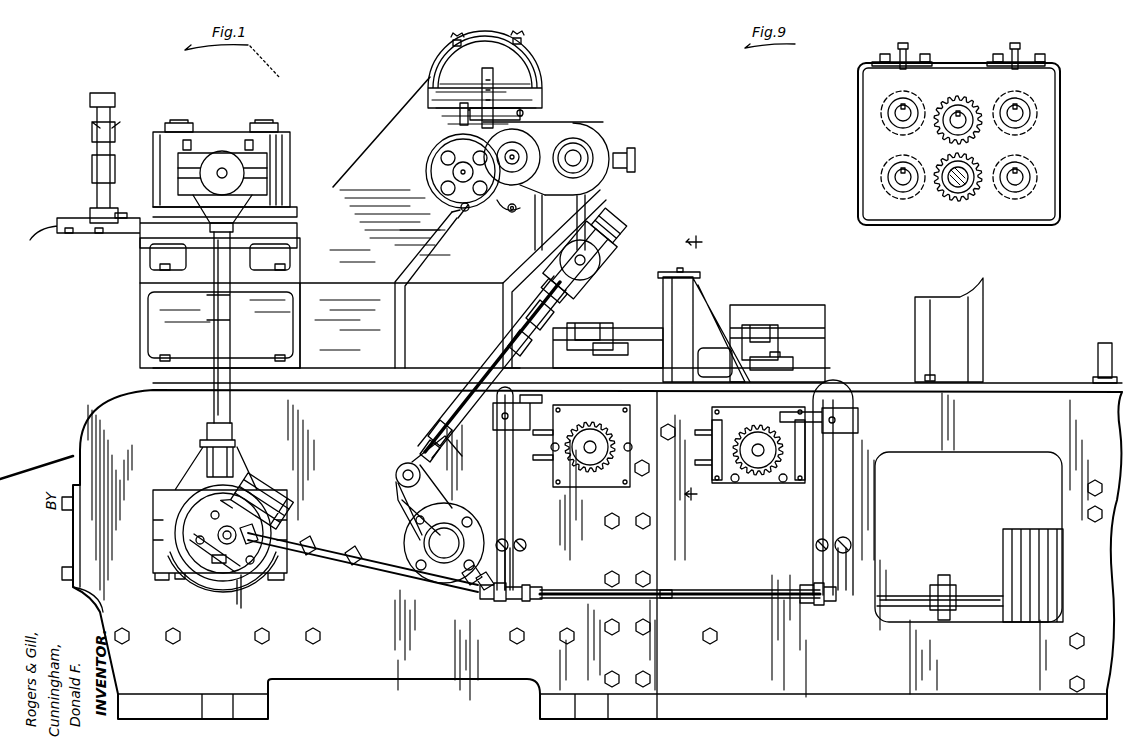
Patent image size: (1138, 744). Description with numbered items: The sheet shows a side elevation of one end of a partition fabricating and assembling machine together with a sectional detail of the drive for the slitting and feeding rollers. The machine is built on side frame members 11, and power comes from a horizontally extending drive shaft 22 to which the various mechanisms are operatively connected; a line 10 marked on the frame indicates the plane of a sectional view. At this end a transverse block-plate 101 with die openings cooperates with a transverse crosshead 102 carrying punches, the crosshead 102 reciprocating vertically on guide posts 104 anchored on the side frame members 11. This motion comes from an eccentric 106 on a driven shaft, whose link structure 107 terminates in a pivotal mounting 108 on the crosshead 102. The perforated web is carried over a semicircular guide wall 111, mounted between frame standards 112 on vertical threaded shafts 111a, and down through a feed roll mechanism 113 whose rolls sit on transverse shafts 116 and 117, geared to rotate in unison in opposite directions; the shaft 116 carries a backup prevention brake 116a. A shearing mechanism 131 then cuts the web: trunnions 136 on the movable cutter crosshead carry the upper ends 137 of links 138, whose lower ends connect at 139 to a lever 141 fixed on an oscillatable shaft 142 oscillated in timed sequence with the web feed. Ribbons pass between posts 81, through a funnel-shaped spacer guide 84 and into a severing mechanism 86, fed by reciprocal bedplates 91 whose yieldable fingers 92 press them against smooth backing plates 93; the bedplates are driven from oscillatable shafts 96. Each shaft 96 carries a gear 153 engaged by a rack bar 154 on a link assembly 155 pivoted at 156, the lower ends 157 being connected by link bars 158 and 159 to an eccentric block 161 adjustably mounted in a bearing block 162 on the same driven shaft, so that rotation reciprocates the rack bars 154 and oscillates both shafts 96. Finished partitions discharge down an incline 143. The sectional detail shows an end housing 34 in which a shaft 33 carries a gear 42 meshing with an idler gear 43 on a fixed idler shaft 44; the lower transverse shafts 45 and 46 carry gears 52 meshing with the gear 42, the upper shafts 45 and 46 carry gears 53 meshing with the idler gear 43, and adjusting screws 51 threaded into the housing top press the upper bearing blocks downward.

In FIG. 1, the machine section line 10 is at (704, 368).
In FIG. 1, the side frame members 11 is at (108, 392).
In FIG. 1, the drive shaft 22 is at (912, 592).
In FIG. 9, the shaft 33 is at (962, 190).
In FIG. 9, the end housing 34 is at (1060, 138).
In FIG. 9, the gear 42 is at (972, 192).
In FIG. 9, the idler gear 43 is at (965, 100).
In FIG. 9, the idler shaft 44 is at (954, 112).
In FIG. 9, the rotatable shafts 45 is at (898, 177).
In FIG. 9, the rotatable shafts 46 is at (1020, 177).
In FIG. 9, the adjusting screws 51 is at (1020, 43).
In FIG. 9, the gear 52 is at (1032, 185).
In FIG. 9, the gears 53 is at (1032, 98).
In FIG. 1, the posts 81 is at (1108, 343).
In FIG. 1, the spacer guide 84 is at (972, 335).
In FIG. 1, the severing mechanism 86 is at (708, 298).
In FIG. 1, the bedplate 91 is at (800, 362).
In FIG. 1, the yieldable fingers 92 is at (760, 325).
In FIG. 1, the backing plates 93 is at (818, 335).
In FIG. 1, the oscillatably rotatable shafts 96 is at (756, 460).
In FIG. 1, the block-plate 101 is at (140, 272).
In FIG. 1, the crosshead 102 is at (280, 152).
In FIG. 1, the guide posts 104 is at (263, 123).
In FIG. 1, the eccentric 106 is at (198, 512).
In FIG. 1, the link structure 107 is at (214, 360).
In FIG. 1, the pivotal mounting 108 is at (225, 168).
In FIG. 1, the guide wall 111 is at (540, 58).
In FIG. 1, the threaded shafts 111a is at (493, 90).
In FIG. 1, the frame standards 112 is at (390, 110).
In FIG. 1, the feed roll mechanism 113 is at (517, 148).
In FIG. 1, the transverse shaft 116 is at (428, 240).
In FIG. 1, the backup prevention brake 116a is at (578, 150).
In FIG. 1, the transverse shaft 117 is at (580, 155).
In FIG. 1, the shearing mechanism 131 is at (545, 255).
In FIG. 1, the trunnions 136 is at (584, 258).
In FIG. 1, the upper ends of links 137 is at (600, 262).
In FIG. 1, the links 138 is at (505, 358).
In FIG. 1, the lower end connection 139 is at (404, 462).
In FIG. 1, the lever 141 is at (445, 482).
In FIG. 1, the oscillatable shaft 142 is at (440, 543).
In FIG. 1, the incline 143 is at (58, 462).
In FIG. 1, the gear 153 is at (765, 470).
In FIG. 1, the rack bars 154 is at (858, 420).
In FIG. 1, the link assemblies 155 is at (845, 500).
In FIG. 1, the pivots 156 is at (852, 546).
In FIG. 1, the lower ends of link assemblies 157 is at (840, 580).
In FIG. 1, the link bar 158 is at (750, 568).
In FIG. 1, the link bar 159 is at (330, 575).
In FIG. 1, the eccentric block 161 is at (282, 520).
In FIG. 1, the bearing block 162 is at (242, 608).